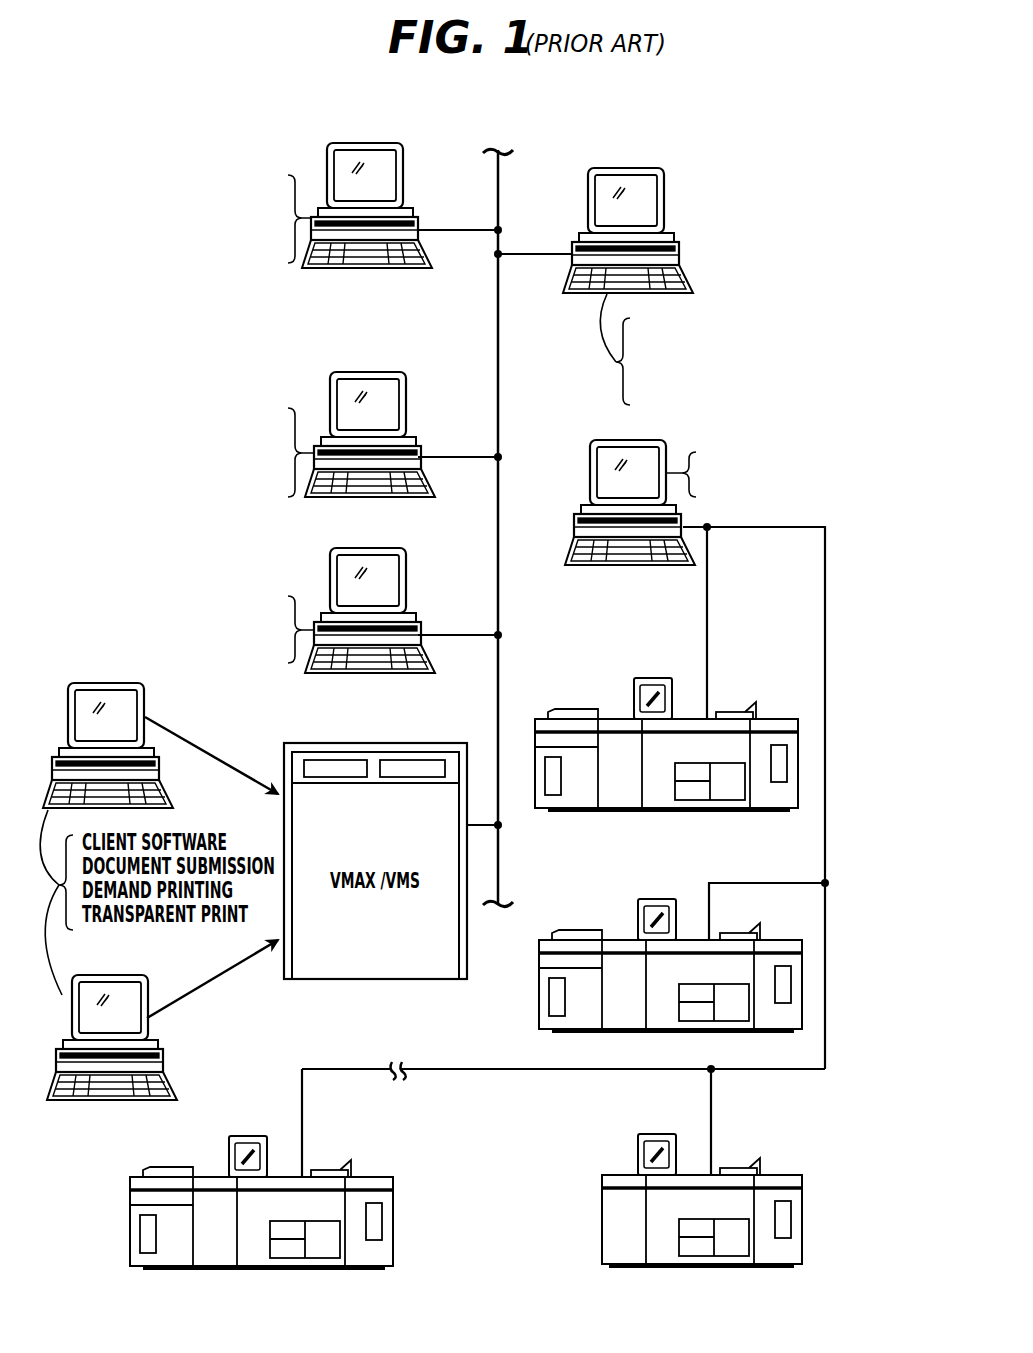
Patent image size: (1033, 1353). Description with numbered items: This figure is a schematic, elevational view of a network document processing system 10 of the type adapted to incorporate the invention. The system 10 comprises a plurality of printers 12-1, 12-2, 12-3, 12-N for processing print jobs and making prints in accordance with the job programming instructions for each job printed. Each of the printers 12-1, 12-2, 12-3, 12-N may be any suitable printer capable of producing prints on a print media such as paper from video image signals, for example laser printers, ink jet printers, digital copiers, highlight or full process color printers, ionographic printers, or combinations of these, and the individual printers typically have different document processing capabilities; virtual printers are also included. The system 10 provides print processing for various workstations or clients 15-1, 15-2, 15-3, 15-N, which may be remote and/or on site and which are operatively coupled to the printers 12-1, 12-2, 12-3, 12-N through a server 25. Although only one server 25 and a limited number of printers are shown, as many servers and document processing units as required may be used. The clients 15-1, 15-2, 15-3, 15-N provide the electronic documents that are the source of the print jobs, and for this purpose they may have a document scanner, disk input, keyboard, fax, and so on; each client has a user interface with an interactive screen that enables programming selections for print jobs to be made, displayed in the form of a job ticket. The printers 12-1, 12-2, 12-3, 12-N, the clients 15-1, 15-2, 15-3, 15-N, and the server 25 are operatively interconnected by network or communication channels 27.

The network document processing system 10 is at (534, 108).
The printer 12-1 is at (606, 695).
The printer 12-2 is at (606, 912).
The printer 12-3 is at (606, 1160).
The printer 12-N is at (438, 1146).
The client 15-1 is at (471, 132).
The client 15-2 is at (473, 356).
The client 15-3 is at (473, 532).
The client 15-N is at (614, 165).
The server 25 is at (600, 430).
The network or communication channels 27 is at (496, 272).